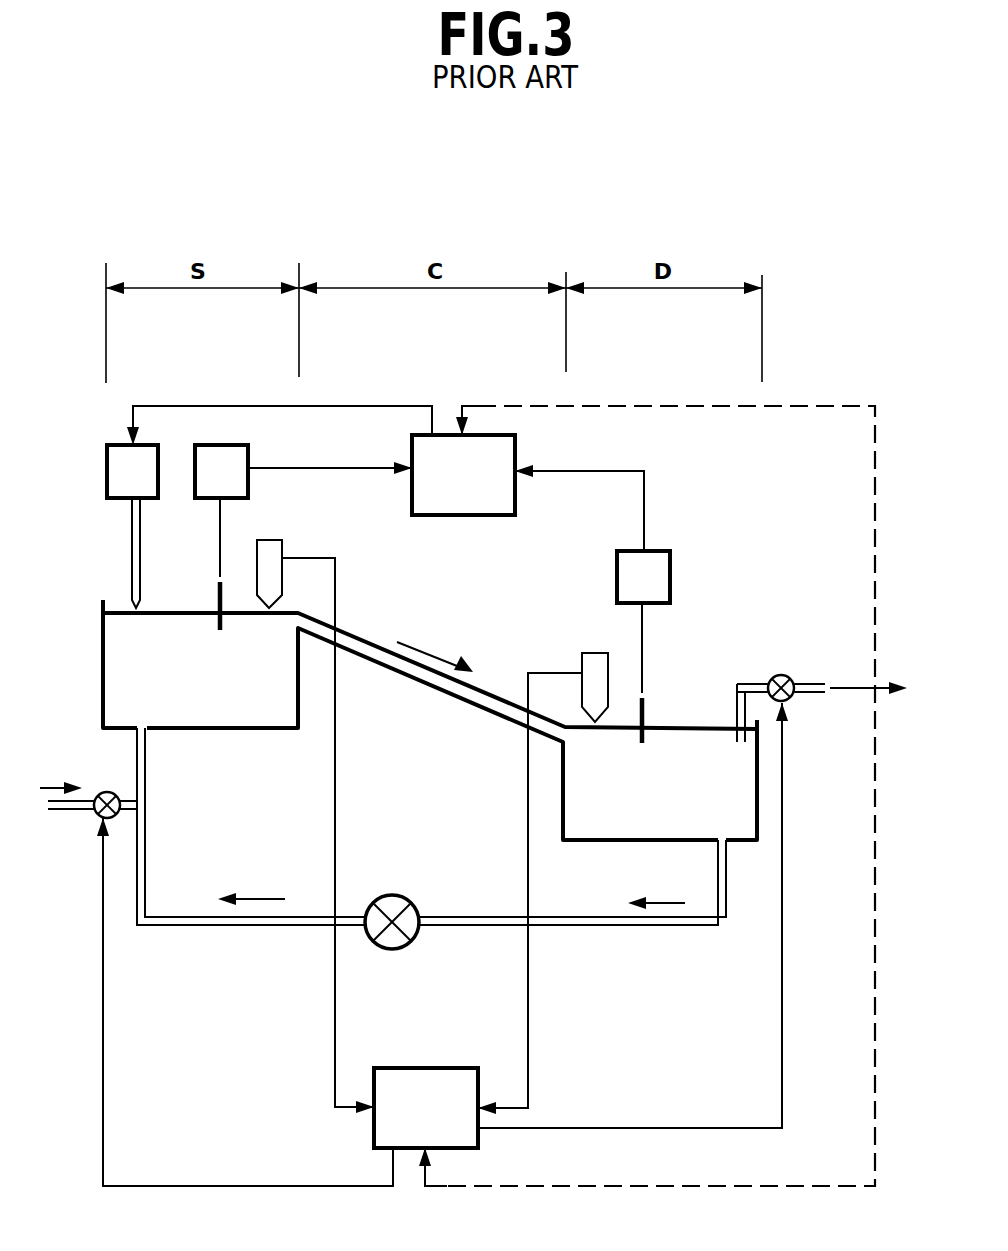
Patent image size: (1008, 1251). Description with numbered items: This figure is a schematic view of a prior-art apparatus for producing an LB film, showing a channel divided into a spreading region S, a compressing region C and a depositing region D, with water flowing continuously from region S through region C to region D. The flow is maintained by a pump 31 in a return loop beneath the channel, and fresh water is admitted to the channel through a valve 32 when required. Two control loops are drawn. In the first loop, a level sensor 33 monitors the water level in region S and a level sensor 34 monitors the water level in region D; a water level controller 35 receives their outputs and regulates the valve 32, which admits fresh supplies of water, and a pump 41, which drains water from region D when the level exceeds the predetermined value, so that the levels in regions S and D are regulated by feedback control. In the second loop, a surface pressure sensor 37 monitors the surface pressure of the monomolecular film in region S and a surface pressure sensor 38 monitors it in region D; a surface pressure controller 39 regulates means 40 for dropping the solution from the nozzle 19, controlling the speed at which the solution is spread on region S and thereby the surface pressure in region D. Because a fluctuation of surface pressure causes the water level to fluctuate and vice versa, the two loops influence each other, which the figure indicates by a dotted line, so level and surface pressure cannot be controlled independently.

The nozzle 19 is at (130, 555).
The pump 31 is at (391, 904).
The valve 32 is at (88, 789).
The level sensor 33 is at (278, 540).
The level sensor 34 is at (590, 653).
The water level controller 35 is at (426, 1108).
The surface pressure sensor 37 is at (221, 537).
The surface pressure sensor 38 is at (643, 647).
The surface pressure controller 39 is at (463, 475).
The means for dropping the solution 40 is at (132, 471).
The pump 41 is at (822, 689).